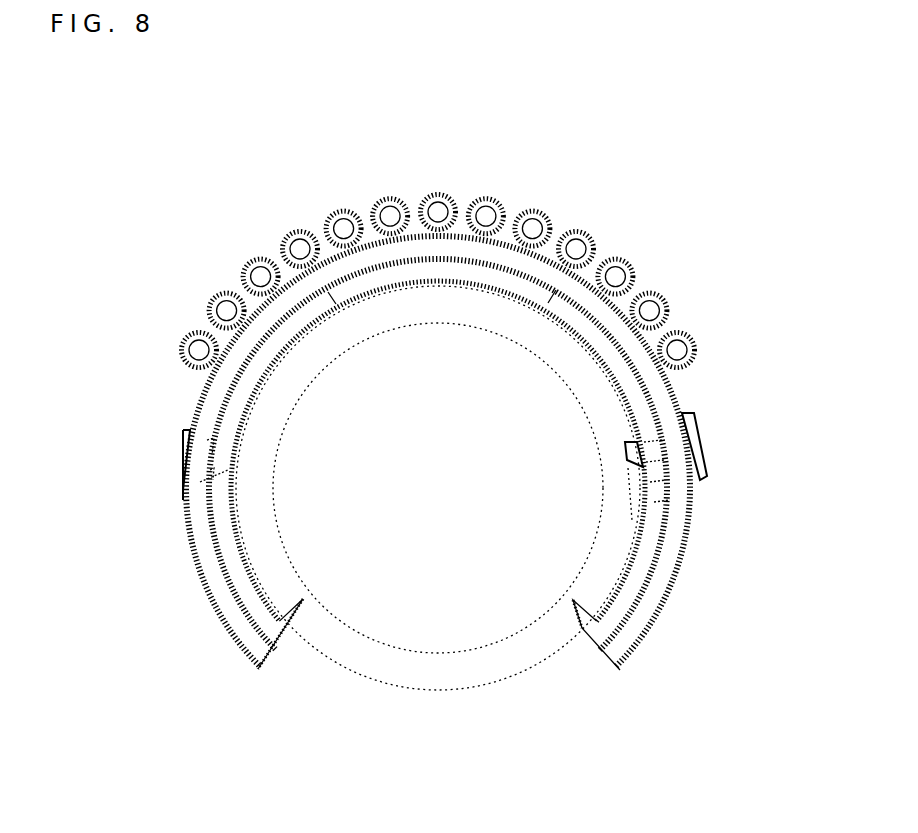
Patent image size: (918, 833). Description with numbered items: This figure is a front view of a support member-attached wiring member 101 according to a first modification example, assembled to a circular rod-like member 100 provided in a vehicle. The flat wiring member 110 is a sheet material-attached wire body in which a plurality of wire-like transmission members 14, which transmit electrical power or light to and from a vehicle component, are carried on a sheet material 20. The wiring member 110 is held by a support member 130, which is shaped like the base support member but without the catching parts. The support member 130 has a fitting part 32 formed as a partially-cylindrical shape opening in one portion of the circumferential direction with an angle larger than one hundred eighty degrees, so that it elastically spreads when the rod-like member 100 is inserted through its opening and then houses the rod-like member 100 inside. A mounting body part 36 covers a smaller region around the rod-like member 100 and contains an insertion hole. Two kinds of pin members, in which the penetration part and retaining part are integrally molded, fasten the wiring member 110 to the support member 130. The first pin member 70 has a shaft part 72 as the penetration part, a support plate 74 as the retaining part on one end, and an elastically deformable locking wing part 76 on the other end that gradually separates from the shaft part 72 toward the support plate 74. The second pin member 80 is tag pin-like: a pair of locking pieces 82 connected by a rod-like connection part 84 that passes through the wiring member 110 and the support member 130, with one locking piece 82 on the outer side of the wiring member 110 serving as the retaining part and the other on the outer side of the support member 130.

The support member-attached wiring member 101 is at (226, 128).
The wire-like transmission members 14 is at (486, 194).
The wiring member 110 is at (197, 400).
The sheet material 20 is at (653, 612).
The mounting body part 36 is at (232, 500).
The rod-like member 100 is at (434, 694).
The support member 130 is at (283, 640).
The fitting part 32 is at (612, 628).
The first pin member 70 is at (768, 480).
The support plate 74 is at (705, 475).
The shaft part 72 is at (665, 468).
The locking wing part 76 is at (640, 462).
The second pin member 80 is at (110, 456).
The locking pieces 82 is at (186, 460).
The rod-like connection part 84 is at (232, 468).